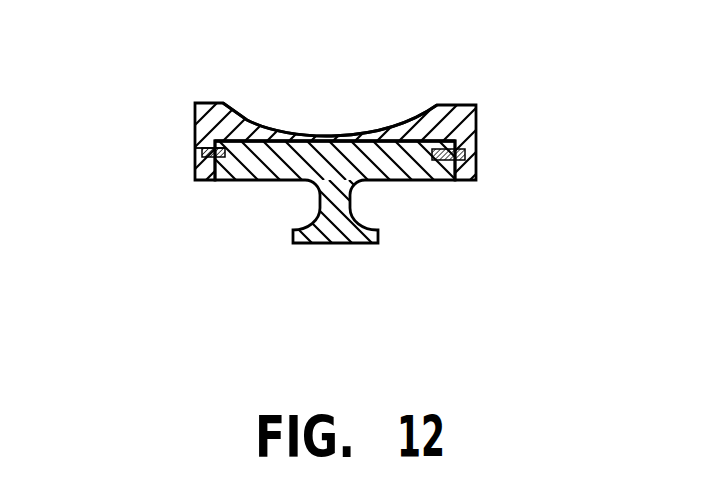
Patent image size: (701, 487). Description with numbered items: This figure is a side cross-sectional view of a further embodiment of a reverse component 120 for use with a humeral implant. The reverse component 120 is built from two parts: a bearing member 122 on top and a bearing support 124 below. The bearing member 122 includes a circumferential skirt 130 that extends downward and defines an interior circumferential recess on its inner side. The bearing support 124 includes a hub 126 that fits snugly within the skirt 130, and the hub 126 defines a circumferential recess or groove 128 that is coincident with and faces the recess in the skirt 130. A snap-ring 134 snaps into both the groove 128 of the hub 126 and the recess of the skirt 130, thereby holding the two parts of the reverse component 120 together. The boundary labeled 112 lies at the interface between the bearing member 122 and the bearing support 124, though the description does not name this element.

The reverse component 120 is at (338, 166).
The bearing member 122 is at (212, 120).
The circumferential recess or groove 128 is at (248, 142).
The interface surface 112 is at (389, 141).
The hub 126 is at (193, 177).
The bearing support 124 is at (392, 182).
The snap-ring 134 is at (195, 147).
The circumferential skirt 130 is at (440, 160).